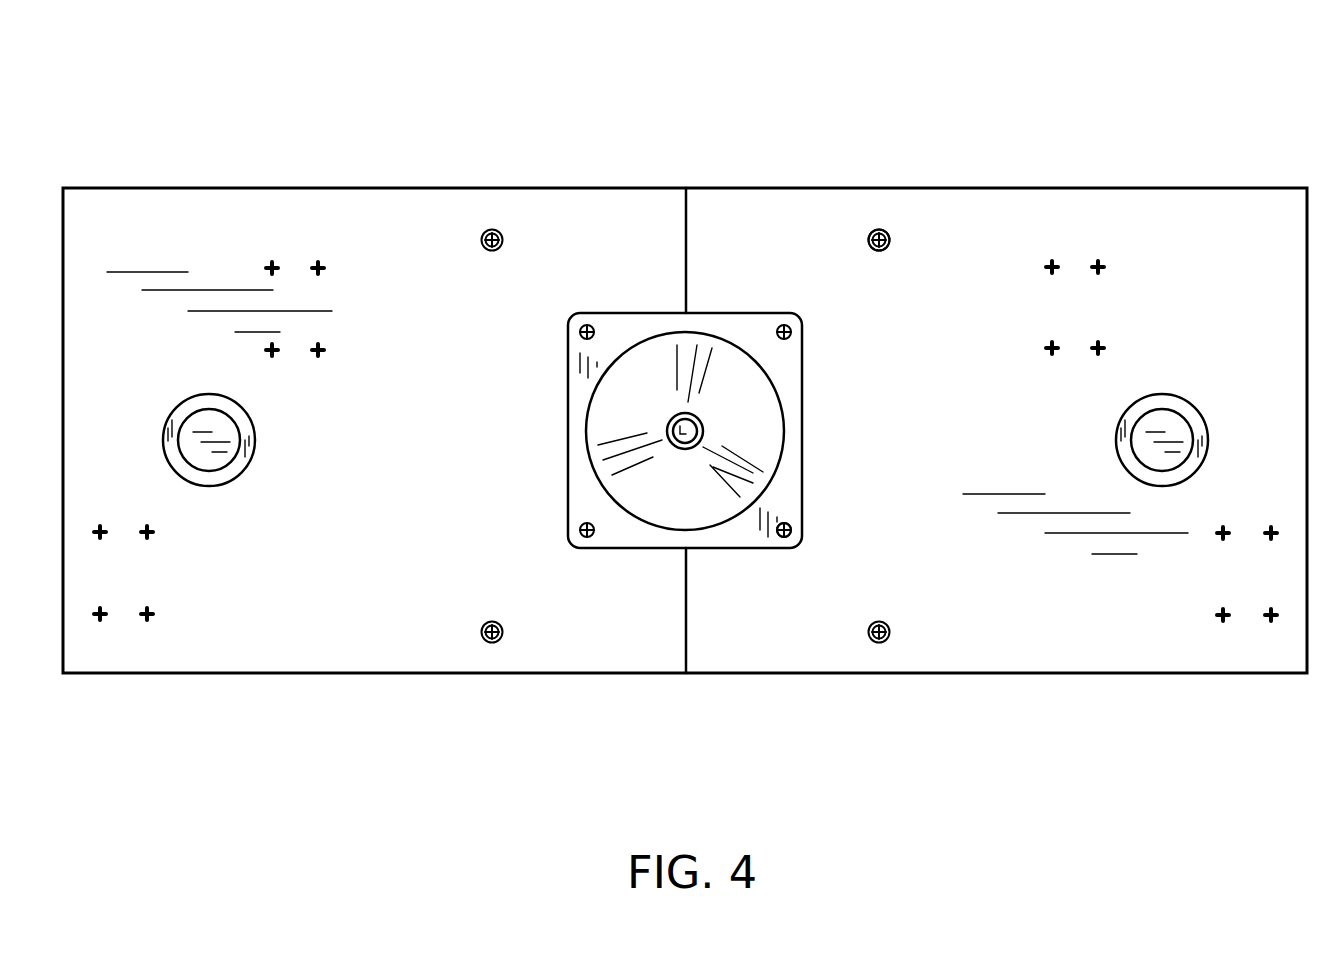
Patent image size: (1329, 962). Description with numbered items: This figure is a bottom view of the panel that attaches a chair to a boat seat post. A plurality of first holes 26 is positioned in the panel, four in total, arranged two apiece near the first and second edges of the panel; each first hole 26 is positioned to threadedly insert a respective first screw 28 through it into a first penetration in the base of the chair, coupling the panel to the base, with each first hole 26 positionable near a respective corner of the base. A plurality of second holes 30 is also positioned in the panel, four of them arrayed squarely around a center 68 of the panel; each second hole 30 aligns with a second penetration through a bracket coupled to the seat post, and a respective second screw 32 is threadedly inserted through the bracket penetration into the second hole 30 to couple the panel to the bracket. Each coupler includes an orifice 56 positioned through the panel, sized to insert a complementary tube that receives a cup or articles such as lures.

The first hole 26 is at (495, 228).
The first screw 28 is at (892, 238).
The second hole 30 is at (587, 537).
The second screw 32 is at (792, 529).
The orifice 56 is at (1182, 395).
The center 68 is at (676, 418).